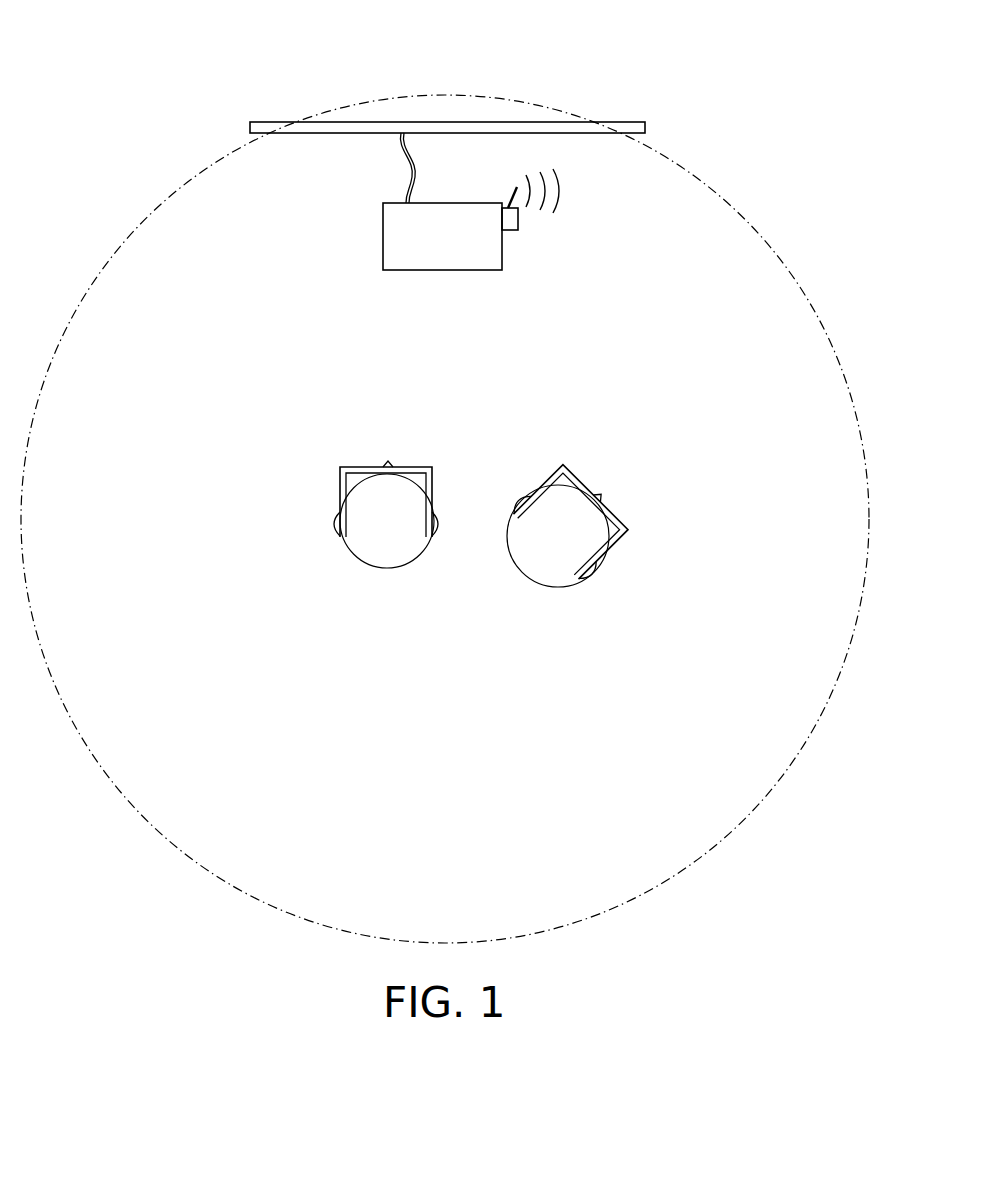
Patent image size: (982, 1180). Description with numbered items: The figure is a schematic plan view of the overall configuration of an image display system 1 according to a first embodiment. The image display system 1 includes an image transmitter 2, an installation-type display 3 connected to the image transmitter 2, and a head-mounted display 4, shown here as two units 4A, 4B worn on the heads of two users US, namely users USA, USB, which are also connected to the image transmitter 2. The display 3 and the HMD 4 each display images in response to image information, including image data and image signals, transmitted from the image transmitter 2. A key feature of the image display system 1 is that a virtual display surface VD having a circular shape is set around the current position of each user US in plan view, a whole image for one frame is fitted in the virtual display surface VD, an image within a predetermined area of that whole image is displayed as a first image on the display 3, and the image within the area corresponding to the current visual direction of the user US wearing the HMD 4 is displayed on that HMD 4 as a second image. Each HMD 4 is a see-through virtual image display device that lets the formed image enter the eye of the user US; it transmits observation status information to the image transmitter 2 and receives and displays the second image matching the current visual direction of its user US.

The image display system 1 is at (818, 96).
The image transmitter 2 is at (488, 271).
The installation-type display 3 is at (607, 122).
The virtual display surface VD is at (806, 289).
The head-mounted display 4 is at (480, 552).
The head-mounted display 4A is at (342, 476).
The head-mounted display 4B is at (625, 527).
The user US is at (480, 552).
The user USA is at (375, 560).
The user USB is at (548, 573).